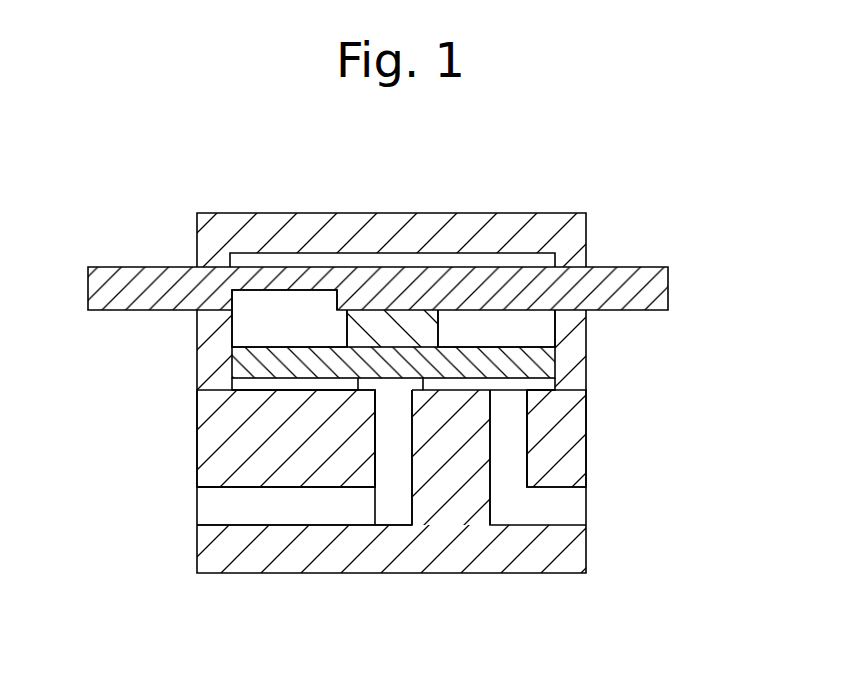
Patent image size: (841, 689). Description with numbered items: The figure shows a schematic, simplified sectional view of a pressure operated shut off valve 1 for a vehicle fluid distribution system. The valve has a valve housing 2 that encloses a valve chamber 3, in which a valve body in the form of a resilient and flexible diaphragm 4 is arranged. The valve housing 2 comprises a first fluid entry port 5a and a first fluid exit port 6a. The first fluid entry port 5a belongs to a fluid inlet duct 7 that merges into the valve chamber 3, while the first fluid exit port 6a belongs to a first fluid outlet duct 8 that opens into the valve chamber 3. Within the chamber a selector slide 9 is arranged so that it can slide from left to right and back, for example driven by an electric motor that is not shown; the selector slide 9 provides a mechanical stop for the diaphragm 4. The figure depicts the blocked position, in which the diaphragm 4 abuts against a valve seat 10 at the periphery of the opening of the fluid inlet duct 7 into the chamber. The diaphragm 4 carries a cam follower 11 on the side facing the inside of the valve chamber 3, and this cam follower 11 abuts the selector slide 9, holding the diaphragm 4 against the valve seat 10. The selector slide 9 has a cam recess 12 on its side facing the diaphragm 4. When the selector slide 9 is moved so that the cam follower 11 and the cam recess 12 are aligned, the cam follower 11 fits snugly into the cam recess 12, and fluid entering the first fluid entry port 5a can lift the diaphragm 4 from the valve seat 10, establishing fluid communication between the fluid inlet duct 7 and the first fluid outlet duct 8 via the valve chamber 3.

The pressure operated shut off valve 1 is at (629, 215).
The valve housing 2 is at (588, 383).
The valve chamber 3 is at (502, 341).
The diaphragm 4 is at (287, 367).
The first fluid entry port 5a is at (223, 507).
The first fluid exit port 6a is at (580, 505).
The fluid inlet duct 7 is at (318, 519).
The first fluid outlet duct 8 is at (537, 519).
The selector slide 9 is at (668, 290).
The valve seat 10 is at (367, 386).
The cam follower 11 is at (387, 333).
The cam recess 12 is at (250, 310).